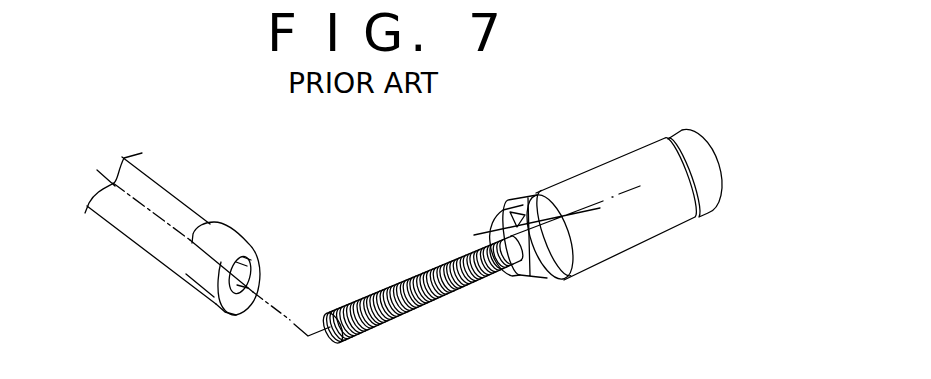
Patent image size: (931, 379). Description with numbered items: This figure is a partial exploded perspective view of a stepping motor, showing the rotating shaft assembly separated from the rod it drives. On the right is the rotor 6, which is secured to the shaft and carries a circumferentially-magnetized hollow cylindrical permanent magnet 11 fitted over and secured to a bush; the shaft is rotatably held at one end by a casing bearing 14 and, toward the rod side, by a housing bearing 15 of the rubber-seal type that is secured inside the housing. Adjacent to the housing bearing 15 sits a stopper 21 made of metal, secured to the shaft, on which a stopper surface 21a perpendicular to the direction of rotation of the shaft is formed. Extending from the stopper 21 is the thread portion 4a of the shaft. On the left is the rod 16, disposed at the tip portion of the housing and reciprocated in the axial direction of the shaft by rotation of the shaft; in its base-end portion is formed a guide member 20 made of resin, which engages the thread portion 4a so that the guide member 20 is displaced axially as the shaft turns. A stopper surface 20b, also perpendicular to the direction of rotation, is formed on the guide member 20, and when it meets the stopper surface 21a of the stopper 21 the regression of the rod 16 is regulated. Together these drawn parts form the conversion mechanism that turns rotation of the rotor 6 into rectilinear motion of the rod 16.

The rod 16 is at (206, 217).
The guide member 20 is at (260, 224).
The stopper surface 20b is at (260, 297).
The thread portion 4a is at (466, 286).
The stopper surface 21a is at (527, 202).
The stopper 21 is at (490, 237).
The housing bearing 15 is at (558, 280).
The permanent magnet 11 is at (622, 253).
The casing bearing 14 is at (708, 213).
The rotor 6 is at (591, 230).